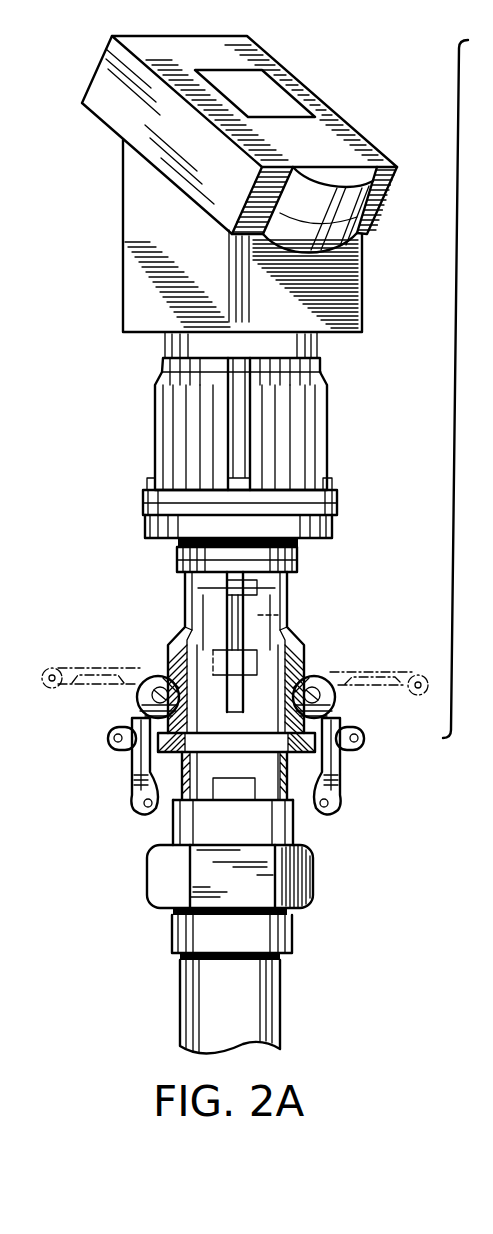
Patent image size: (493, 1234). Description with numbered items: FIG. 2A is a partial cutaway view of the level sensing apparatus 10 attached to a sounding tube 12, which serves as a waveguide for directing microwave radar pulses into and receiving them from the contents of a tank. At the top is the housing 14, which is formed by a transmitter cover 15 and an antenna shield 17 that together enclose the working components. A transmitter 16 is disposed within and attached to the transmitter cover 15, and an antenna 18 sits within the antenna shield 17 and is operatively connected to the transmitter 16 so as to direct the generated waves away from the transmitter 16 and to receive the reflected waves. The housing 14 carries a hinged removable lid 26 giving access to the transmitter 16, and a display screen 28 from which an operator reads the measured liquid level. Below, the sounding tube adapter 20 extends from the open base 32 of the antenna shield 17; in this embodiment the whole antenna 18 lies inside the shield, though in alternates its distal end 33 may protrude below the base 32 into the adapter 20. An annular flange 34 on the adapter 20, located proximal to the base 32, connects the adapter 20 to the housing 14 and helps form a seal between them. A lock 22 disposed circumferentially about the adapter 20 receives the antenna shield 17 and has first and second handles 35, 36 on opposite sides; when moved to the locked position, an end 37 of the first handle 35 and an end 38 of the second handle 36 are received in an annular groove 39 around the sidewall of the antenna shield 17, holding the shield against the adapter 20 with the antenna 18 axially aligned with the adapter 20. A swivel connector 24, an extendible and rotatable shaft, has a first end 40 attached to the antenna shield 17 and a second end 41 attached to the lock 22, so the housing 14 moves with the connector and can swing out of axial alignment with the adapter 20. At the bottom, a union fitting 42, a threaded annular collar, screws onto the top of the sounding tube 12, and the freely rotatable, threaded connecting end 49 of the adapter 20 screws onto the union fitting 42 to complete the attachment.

The level sensing apparatus 10 is at (372, 50).
The sounding tube 12 is at (203, 1012).
The housing 14 is at (456, 327).
The transmitter cover 15 is at (165, 428).
The transmitter 16 is at (298, 566).
The antenna shield 17 is at (233, 607).
The antenna 18 is at (212, 597).
The sounding tube adapter 20 is at (300, 867).
The lock 22 is at (180, 638).
The swivel connector 24 is at (282, 617).
The hinged removable lid 26 is at (338, 128).
The display screen 28 is at (278, 98).
The base of the antenna shield 32 is at (330, 728).
The distal end of the antenna 33 is at (157, 723).
The annular flange 34 is at (215, 787).
The first handle 35 is at (132, 781).
The second handle 36 is at (340, 797).
The end of the first handle 37 is at (153, 673).
The end of the second handle 38 is at (330, 670).
The annular groove 39 is at (295, 648).
The first end of the swivel connector 40 is at (293, 588).
The second end of the swivel connector 41 is at (167, 827).
The union fitting 42 is at (277, 943).
The connecting end 49 is at (300, 890).